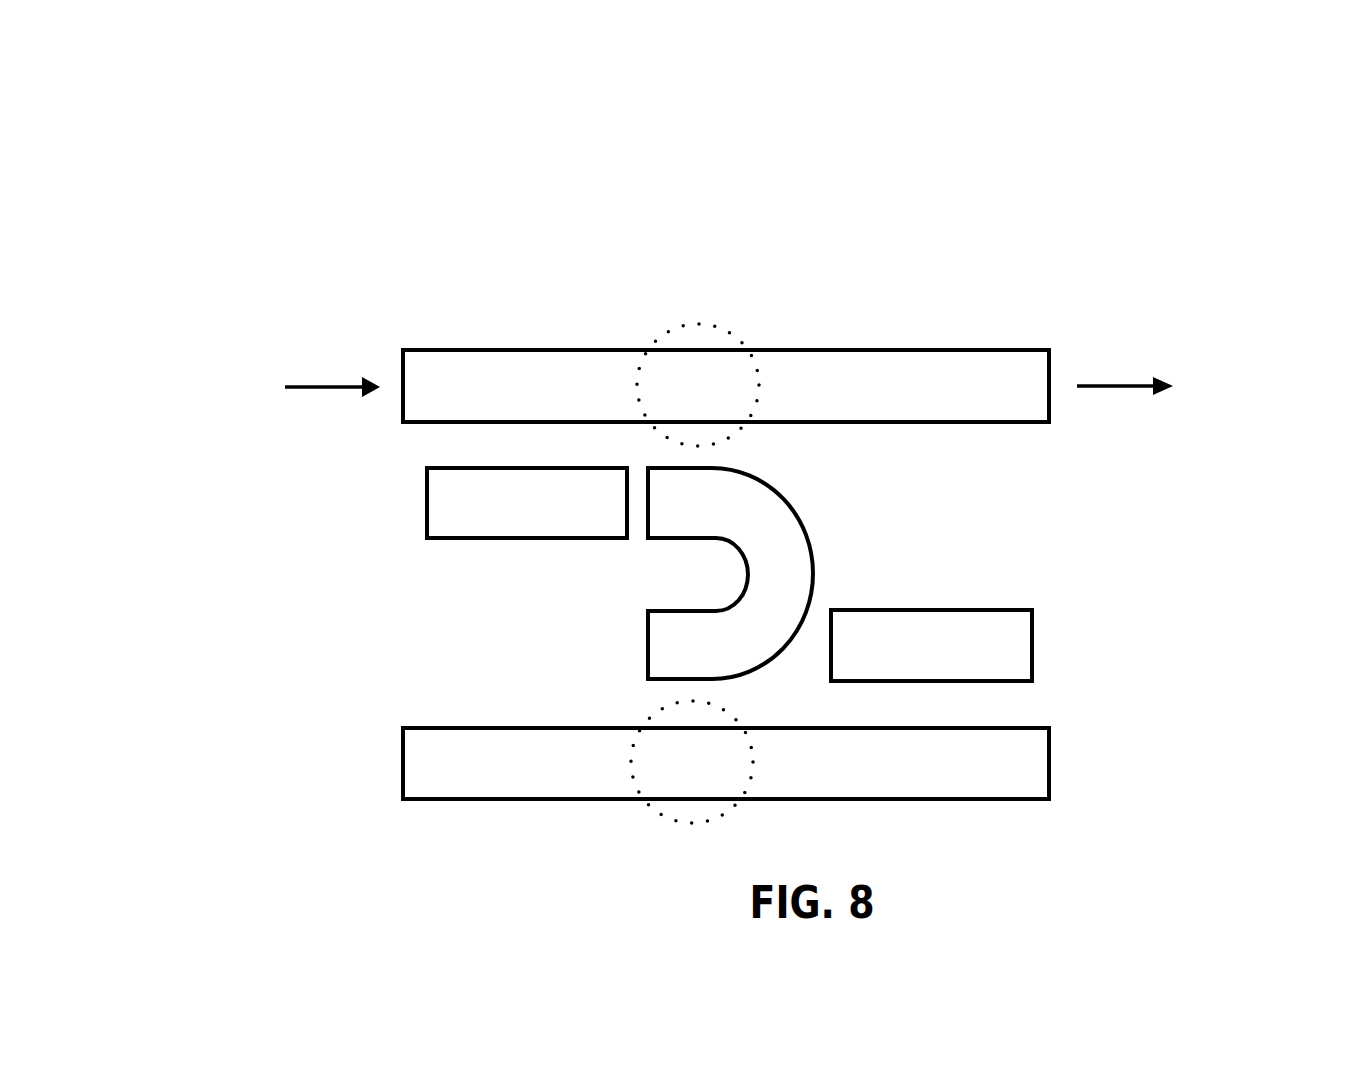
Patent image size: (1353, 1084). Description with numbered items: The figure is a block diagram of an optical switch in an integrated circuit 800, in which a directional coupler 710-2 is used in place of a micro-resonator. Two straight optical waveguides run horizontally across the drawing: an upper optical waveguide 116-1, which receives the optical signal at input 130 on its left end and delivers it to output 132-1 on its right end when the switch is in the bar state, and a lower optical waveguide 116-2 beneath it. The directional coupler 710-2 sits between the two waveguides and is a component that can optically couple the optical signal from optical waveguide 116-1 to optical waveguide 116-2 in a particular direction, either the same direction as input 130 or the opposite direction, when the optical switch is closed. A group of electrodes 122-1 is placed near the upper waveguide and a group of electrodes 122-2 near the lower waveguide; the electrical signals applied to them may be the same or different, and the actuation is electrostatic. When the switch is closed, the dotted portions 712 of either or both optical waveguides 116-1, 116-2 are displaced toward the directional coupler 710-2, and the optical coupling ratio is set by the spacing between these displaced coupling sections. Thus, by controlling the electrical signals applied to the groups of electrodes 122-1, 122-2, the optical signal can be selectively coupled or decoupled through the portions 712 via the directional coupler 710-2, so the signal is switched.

The integrated circuit 800 is at (328, 163).
The optical waveguide 116-1 is at (850, 387).
The optical waveguide 116-2 is at (1007, 775).
The group of electrodes 122-1 is at (532, 503).
The group of electrodes 122-2 is at (1007, 645).
The directional coupler 710-2 is at (788, 563).
The portions 712 is at (757, 403).
The input 130 is at (330, 385).
The output 132-1 is at (1127, 386).